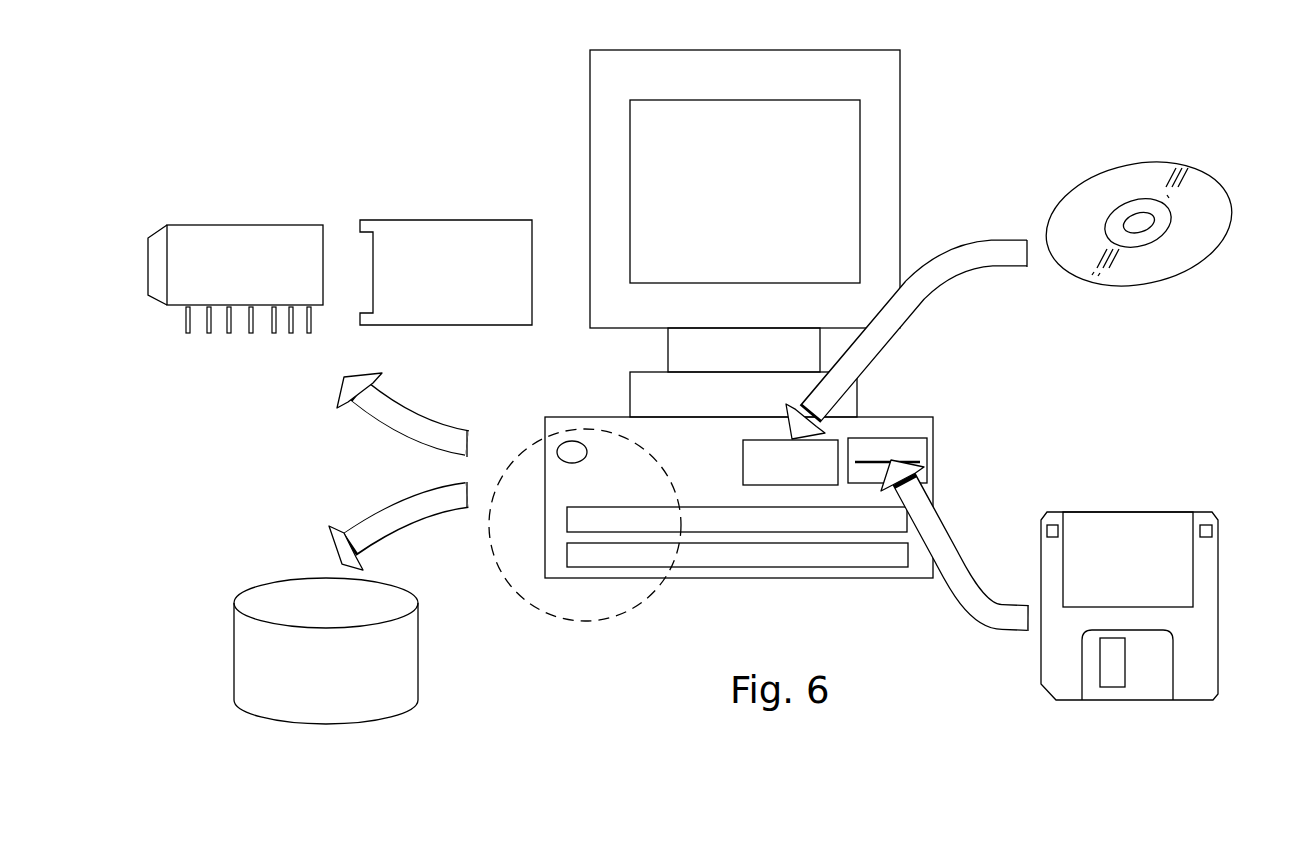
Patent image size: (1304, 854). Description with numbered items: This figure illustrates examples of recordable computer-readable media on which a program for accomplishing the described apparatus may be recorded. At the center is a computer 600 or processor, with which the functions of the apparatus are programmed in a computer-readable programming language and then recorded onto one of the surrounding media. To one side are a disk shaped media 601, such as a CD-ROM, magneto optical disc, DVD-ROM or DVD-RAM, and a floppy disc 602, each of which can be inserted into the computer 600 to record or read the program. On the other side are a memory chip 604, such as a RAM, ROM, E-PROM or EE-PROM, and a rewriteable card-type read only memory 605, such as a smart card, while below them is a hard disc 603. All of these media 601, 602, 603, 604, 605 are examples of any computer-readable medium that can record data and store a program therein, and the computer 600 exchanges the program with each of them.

The computer 600 is at (900, 92).
The disk shaped media 601 is at (1220, 180).
The floppy disc 602 is at (1218, 537).
The hard disc 603 is at (232, 673).
The memory chip 604 is at (200, 225).
The rewriteable card-type read only memory 605 is at (405, 221).